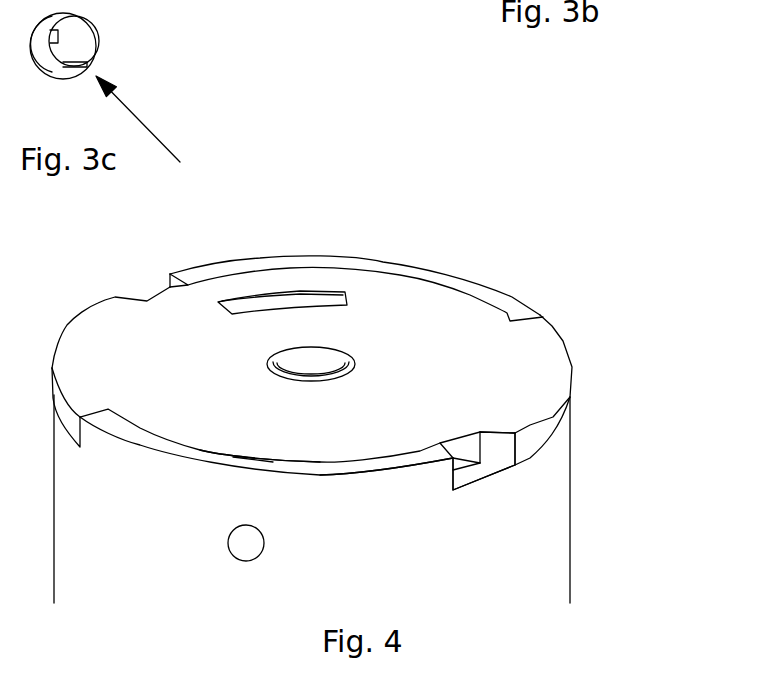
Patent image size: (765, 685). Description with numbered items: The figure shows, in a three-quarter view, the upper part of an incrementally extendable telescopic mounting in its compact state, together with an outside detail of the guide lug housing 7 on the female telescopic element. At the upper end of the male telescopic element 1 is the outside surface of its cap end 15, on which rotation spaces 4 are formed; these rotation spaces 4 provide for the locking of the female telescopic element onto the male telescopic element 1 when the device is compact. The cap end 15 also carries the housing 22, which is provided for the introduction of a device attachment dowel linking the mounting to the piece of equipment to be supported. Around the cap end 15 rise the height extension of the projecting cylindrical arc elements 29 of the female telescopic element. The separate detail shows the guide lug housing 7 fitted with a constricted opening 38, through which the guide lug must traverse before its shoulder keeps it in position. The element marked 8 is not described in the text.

In FIG. 3C, the constricted opening 38 is at (67, 45).
In FIG. 4, the male telescopic element 1 is at (586, 385).
In FIG. 4, the rotation spaces 4 is at (502, 457).
In FIG. 4, the guide lug housing 7 is at (216, 552).
In FIG. 4, the slot 8 is at (300, 270).
In FIG. 4, the cap end 15 is at (458, 317).
In FIG. 4, the housing 22 is at (340, 343).
In FIG. 4, the projecting cylindrical arc elements 29 is at (494, 338).